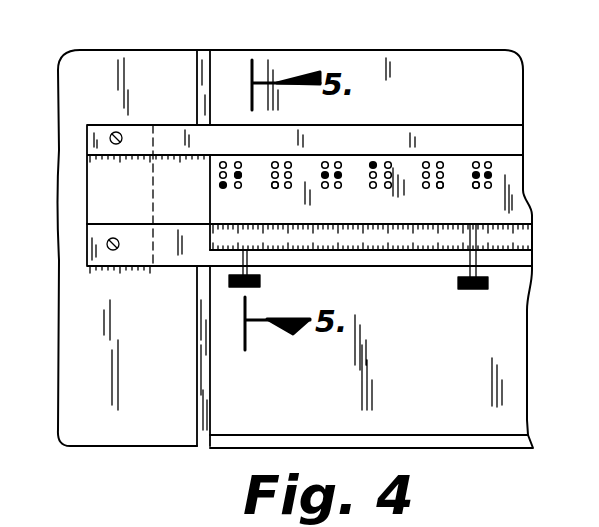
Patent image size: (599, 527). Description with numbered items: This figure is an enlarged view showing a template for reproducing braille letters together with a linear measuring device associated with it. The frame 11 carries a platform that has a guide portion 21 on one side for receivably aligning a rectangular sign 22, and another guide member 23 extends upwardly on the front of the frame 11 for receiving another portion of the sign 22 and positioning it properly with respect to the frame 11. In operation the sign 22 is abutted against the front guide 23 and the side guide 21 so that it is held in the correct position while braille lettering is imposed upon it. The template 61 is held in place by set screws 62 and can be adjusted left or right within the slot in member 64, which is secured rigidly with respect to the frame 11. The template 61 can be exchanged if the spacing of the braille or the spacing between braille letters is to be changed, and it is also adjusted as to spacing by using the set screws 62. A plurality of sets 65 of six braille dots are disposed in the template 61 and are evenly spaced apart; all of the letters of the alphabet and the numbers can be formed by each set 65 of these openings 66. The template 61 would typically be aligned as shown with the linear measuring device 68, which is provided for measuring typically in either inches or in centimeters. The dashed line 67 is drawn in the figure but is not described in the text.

The frame 11 is at (78, 428).
The guide portion 21 is at (196, 82).
The sign 22 is at (433, 369).
The guide member 23 is at (446, 437).
The template 61 is at (515, 204).
The set screws 62 is at (262, 283).
The member 64 is at (190, 254).
The sets of six braille dots 65 is at (272, 153).
The openings 66 is at (273, 186).
The dashed reference line 67 is at (137, 166).
The linear measuring device 68 is at (391, 240).